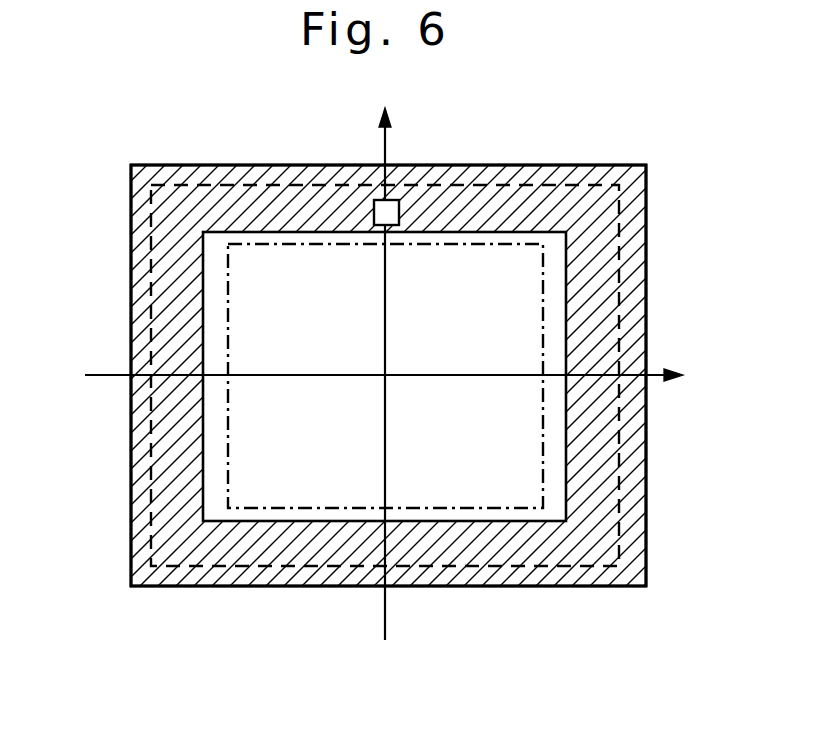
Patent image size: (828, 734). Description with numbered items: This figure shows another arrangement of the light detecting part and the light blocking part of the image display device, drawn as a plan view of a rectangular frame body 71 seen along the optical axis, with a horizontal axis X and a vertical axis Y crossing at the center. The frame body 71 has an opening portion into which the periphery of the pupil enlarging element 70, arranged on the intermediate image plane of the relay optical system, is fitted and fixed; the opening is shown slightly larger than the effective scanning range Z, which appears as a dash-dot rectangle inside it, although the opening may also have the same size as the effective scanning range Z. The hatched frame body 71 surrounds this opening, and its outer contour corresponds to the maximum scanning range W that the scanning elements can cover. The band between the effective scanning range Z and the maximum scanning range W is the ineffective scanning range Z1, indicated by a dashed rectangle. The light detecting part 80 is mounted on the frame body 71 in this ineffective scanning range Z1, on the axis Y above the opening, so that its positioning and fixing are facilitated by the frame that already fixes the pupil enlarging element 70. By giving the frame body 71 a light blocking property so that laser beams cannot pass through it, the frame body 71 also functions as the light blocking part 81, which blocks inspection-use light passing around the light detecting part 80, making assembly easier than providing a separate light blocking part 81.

The pupil enlarging element 70 is at (567, 308).
The frame body 71 is at (388, 338).
The light blocking part 81 is at (545, 165).
The light detecting part 80 is at (388, 198).
The maximum scanning range W is at (132, 518).
The effective scanning range Z is at (227, 277).
The ineffective scanning range Z1 is at (148, 418).
The X axis X is at (396, 376).
The Y axis Y is at (384, 359).